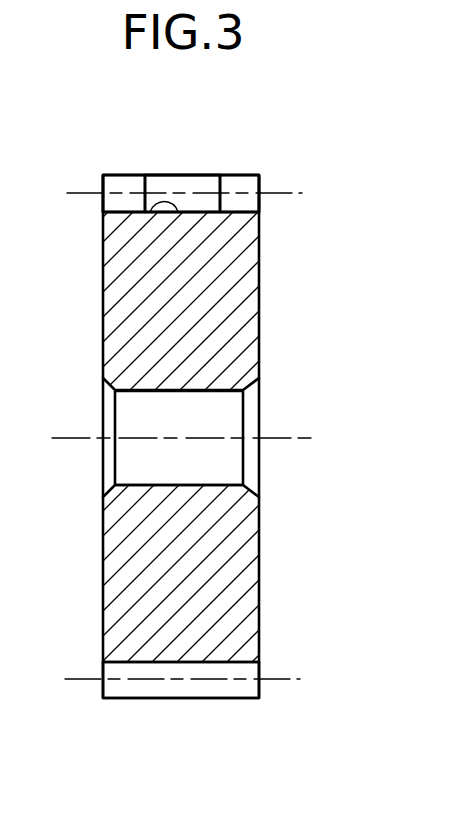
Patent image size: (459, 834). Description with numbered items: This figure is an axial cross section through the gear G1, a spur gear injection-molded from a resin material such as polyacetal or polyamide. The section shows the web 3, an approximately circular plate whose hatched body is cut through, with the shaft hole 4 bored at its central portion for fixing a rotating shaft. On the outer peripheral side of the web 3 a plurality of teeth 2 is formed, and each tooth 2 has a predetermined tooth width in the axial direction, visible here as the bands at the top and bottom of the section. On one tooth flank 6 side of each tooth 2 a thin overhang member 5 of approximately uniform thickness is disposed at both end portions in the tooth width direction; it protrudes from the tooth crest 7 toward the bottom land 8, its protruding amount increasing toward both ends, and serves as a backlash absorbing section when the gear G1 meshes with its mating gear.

The gear G1 is at (297, 238).
The tooth 2 is at (163, 193).
The web 3 is at (248, 285).
The shaft hole 4 is at (222, 486).
The overhang member 5 is at (113, 174).
The tooth flank 6 is at (200, 182).
The tooth crest 7 is at (181, 175).
The bottom land 8 is at (150, 212).